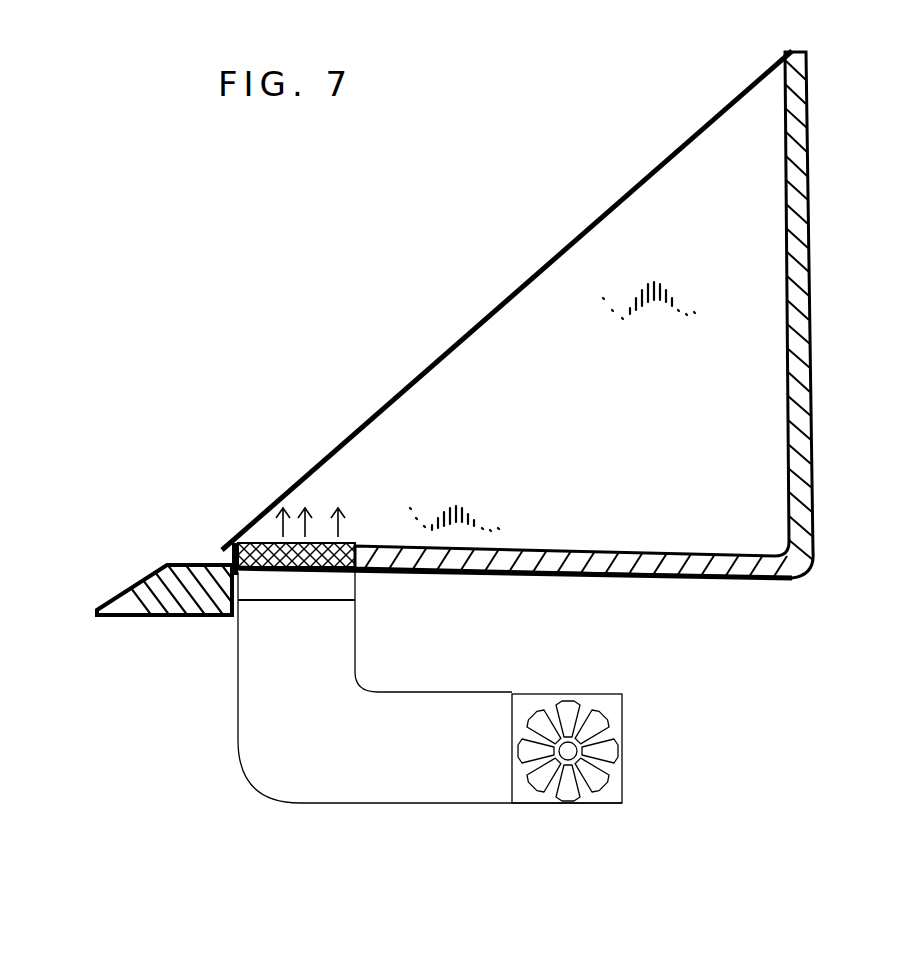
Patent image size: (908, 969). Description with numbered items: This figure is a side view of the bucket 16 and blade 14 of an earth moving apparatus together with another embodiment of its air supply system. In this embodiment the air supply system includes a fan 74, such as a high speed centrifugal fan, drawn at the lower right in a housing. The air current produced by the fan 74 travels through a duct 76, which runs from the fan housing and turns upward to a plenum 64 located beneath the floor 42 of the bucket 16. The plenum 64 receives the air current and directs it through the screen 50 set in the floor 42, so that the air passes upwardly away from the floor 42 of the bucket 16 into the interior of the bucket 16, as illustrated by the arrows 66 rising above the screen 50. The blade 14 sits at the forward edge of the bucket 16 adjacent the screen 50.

The blade 14 is at (172, 548).
The bucket 16 is at (812, 237).
The floor 42 is at (572, 548).
The screen 50 is at (355, 545).
The plenum 64 is at (357, 585).
The arrows 66 is at (312, 512).
The fan 74 is at (617, 706).
The duct 76 is at (345, 785).